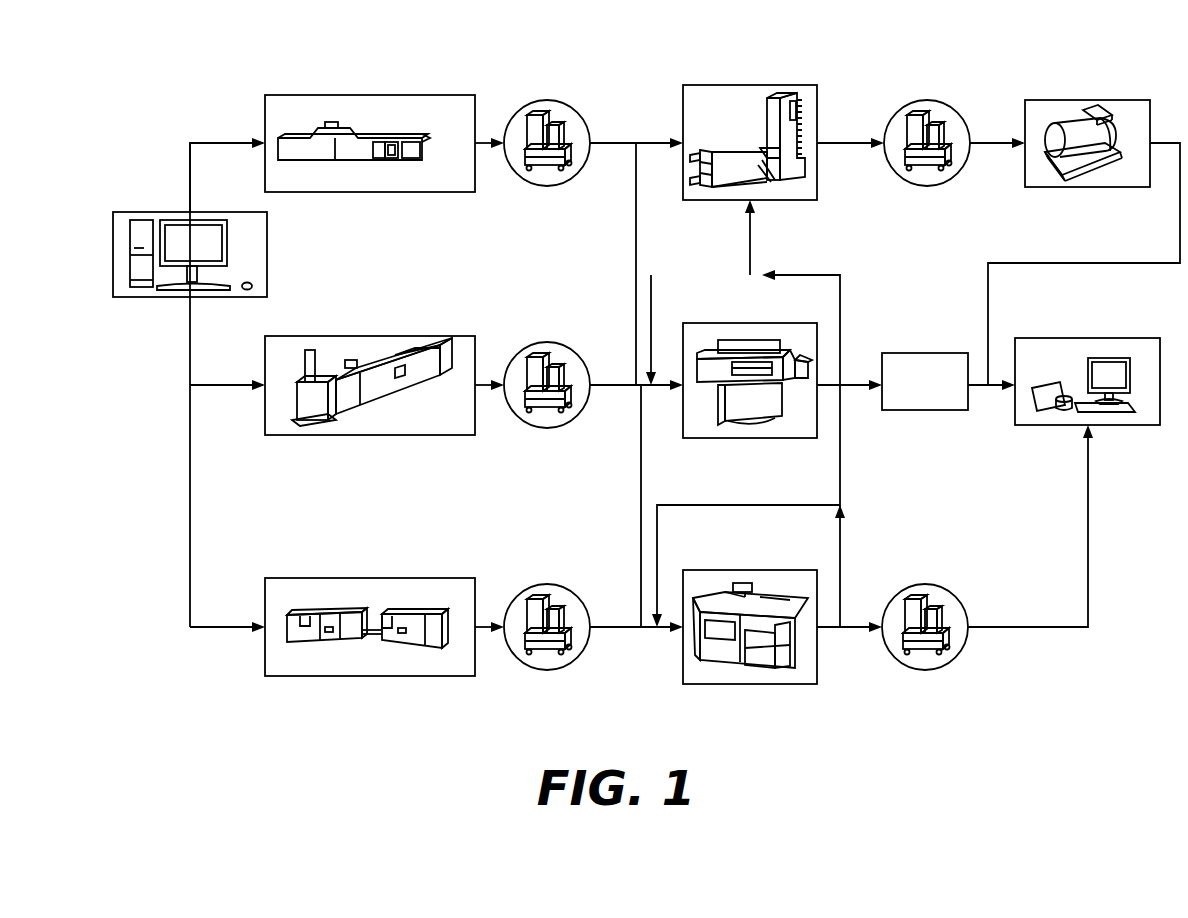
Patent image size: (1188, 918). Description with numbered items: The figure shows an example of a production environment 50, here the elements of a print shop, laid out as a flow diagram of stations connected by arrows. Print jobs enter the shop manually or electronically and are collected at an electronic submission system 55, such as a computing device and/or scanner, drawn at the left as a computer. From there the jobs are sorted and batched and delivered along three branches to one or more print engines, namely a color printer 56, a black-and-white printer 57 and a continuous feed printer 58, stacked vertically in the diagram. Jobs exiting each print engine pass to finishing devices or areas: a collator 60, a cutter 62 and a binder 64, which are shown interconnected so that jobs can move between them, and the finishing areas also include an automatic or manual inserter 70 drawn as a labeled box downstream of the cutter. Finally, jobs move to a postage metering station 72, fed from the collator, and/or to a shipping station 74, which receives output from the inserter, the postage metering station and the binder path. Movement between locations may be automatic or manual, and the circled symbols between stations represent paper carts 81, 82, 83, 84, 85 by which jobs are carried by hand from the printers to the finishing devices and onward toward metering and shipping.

The production environment 50 is at (210, 78).
The electronic submission system 55 is at (138, 297).
The color printer 56 is at (387, 192).
The black-and-white printer 57 is at (387, 435).
The continuous feed printer 58 is at (387, 676).
The collator 60 is at (758, 200).
The cutter 62 is at (758, 438).
The binder 64 is at (760, 684).
The inserter 70 is at (922, 410).
The postage metering station 72 is at (1082, 187).
The shipping station 74 is at (1115, 425).
The paper cart 81 is at (545, 186).
The paper cart 82 is at (545, 428).
The paper cart 83 is at (545, 670).
The paper cart 84 is at (925, 186).
The paper cart 85 is at (925, 670).